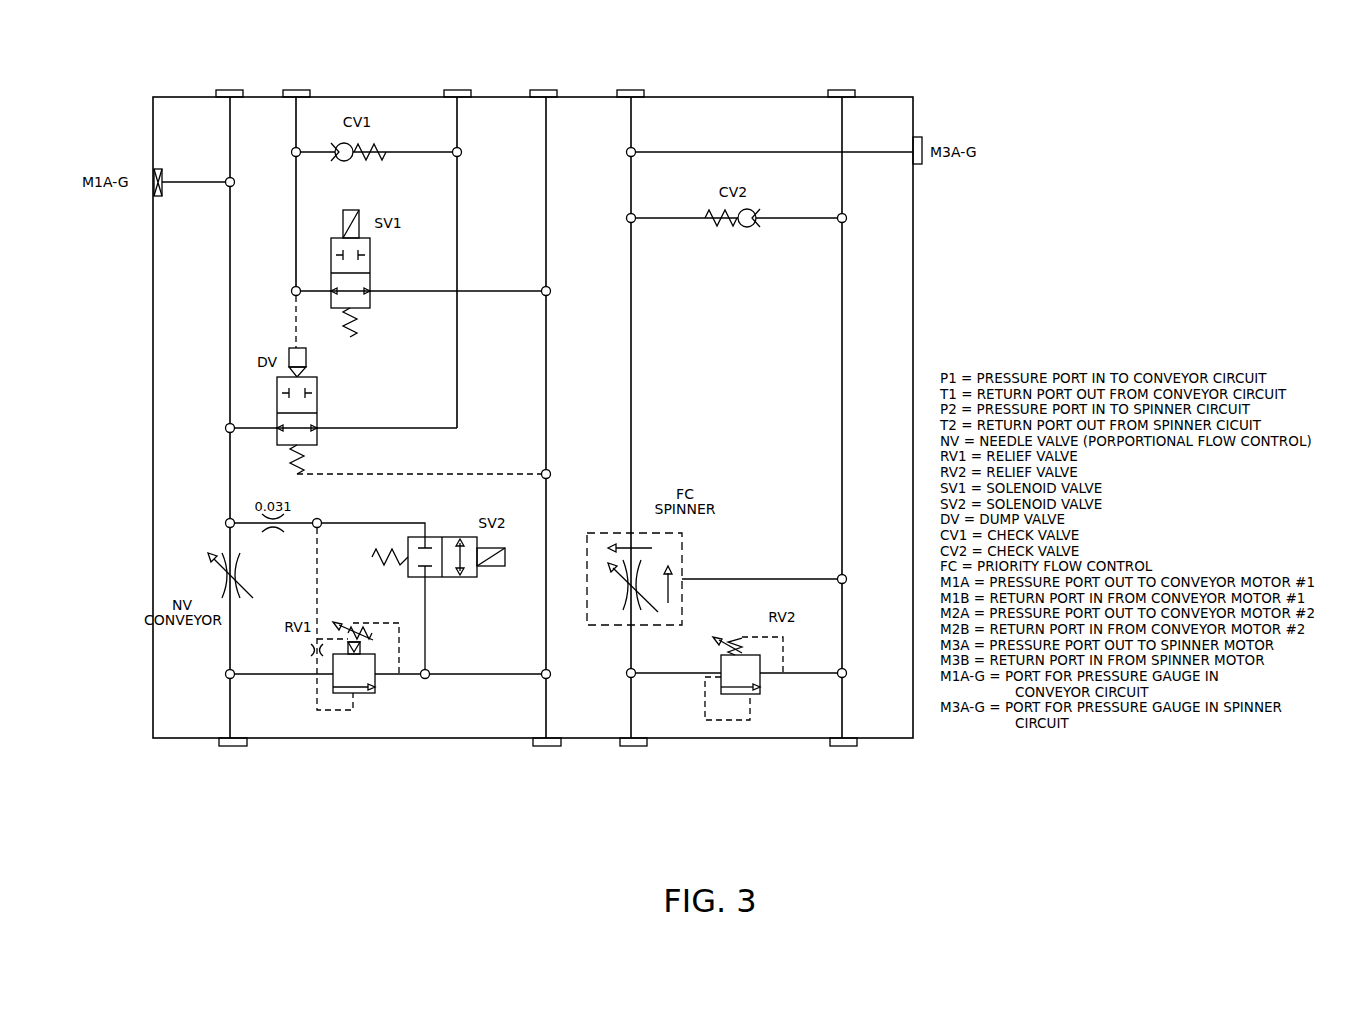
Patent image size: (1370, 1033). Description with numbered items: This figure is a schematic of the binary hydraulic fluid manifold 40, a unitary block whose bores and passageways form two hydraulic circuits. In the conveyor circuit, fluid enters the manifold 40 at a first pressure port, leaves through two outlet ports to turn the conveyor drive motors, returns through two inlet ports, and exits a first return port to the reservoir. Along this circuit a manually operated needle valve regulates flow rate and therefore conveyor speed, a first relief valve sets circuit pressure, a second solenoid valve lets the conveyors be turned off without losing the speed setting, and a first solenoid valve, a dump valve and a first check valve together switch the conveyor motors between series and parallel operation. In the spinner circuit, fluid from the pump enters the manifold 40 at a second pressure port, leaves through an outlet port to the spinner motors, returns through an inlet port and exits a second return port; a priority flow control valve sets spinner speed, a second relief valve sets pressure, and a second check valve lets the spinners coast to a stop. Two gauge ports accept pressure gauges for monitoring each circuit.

The binary hydraulic fluid manifold 40 is at (918, 320).